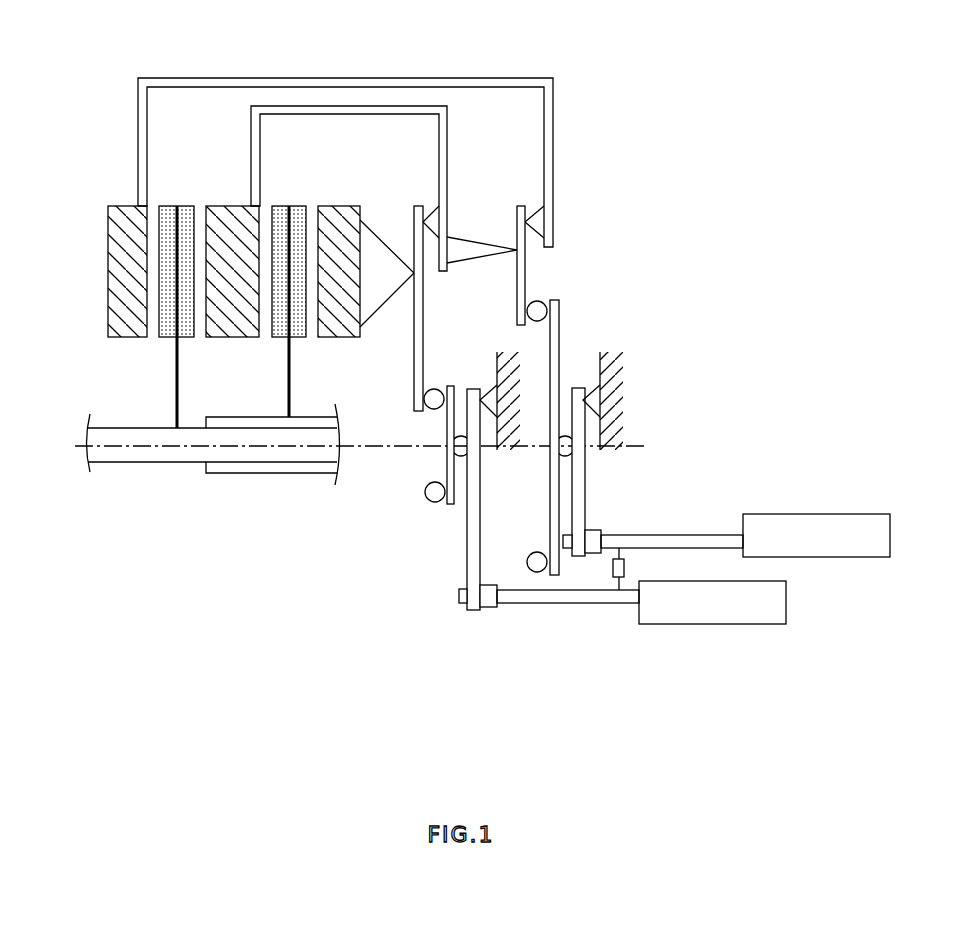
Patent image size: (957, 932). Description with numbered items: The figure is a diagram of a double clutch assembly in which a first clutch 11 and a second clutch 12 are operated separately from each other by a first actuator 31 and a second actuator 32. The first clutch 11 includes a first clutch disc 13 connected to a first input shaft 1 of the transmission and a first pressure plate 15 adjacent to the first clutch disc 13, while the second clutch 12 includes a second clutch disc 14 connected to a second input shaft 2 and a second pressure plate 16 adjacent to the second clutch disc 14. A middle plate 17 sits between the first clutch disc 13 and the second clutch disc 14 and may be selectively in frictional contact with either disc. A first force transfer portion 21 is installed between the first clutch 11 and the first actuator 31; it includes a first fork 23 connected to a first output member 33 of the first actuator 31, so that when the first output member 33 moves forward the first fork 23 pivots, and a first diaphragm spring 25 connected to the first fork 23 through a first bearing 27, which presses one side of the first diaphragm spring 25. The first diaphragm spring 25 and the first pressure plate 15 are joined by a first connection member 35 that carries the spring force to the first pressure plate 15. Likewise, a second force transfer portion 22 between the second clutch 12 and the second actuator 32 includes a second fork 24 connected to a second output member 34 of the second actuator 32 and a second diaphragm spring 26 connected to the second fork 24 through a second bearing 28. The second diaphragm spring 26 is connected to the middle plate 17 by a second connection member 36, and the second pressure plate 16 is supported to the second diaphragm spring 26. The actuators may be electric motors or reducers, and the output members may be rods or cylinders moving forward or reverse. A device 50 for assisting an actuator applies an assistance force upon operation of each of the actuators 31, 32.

The first input shaft 1 is at (148, 455).
The second input shaft 2 is at (282, 467).
The first clutch 11 is at (163, 346).
The second clutch 12 is at (275, 346).
The first clutch disc 13 is at (168, 210).
The second clutch disc 14 is at (298, 210).
The first pressure plate 15 is at (113, 273).
The second pressure plate 16 is at (337, 340).
The middle plate 17 is at (220, 210).
The first force transfer portion 21 is at (581, 320).
The second force transfer portion 22 is at (413, 532).
The first fork 23 is at (586, 494).
The second fork 24 is at (467, 553).
The first diaphragm spring 25 is at (522, 271).
The second diaphragm spring 26 is at (419, 316).
The first bearing 27 is at (549, 493).
The second bearing 28 is at (448, 460).
The first actuator 31 is at (827, 523).
The second actuator 32 is at (713, 620).
The first output member 33 is at (687, 542).
The second output member 34 is at (545, 603).
The first connection member 35 is at (322, 87).
The second connection member 36 is at (368, 108).
The device for assisting an actuator 50 is at (614, 568).